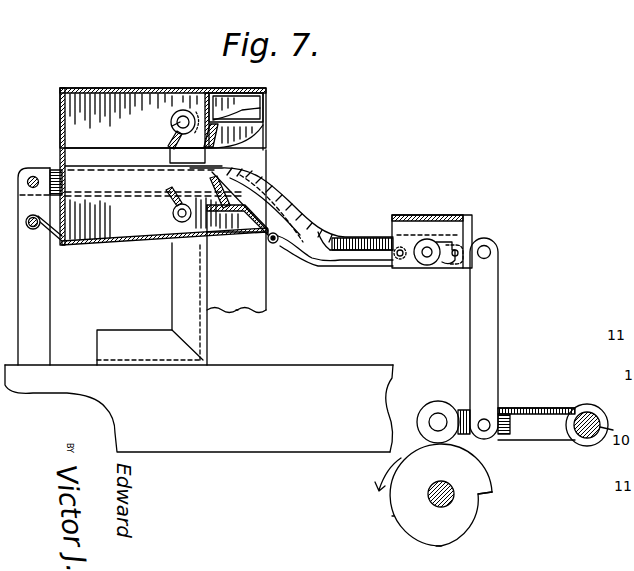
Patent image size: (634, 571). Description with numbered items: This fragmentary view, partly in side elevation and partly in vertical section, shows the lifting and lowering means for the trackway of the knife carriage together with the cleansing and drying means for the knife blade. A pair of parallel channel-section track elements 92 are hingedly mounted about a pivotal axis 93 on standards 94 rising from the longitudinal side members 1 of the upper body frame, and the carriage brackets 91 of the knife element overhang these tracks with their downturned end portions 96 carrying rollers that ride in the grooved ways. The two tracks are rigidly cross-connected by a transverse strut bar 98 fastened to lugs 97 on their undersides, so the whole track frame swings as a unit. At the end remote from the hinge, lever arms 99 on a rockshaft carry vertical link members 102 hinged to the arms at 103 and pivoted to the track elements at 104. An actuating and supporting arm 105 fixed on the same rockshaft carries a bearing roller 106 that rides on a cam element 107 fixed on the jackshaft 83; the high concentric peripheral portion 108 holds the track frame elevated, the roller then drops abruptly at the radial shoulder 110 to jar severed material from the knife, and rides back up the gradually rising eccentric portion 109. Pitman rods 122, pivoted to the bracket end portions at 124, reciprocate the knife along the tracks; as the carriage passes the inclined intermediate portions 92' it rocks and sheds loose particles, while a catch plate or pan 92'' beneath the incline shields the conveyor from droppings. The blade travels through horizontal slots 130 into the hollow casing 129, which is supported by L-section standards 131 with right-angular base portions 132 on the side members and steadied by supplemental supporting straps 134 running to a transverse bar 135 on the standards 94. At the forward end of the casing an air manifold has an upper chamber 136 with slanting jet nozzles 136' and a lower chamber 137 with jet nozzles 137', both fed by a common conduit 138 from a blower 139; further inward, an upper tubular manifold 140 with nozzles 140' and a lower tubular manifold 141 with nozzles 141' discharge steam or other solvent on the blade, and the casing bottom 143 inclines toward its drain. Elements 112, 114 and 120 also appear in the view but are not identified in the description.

The longitudinal side members 1 is at (250, 440).
The jackshaft 83 is at (430, 493).
The carriage brackets 91 is at (430, 218).
The track elements 92 is at (355, 270).
The inclined intermediate portions 92' is at (288, 208).
The catch plate or pan 92'' is at (335, 269).
The pivotal axis 93 is at (34, 176).
The standards 94 is at (40, 325).
The downturned end portions 96 is at (412, 226).
The lugs 97 is at (283, 248).
The transverse strut bar 98 is at (263, 258).
The lever arms 99 is at (551, 427).
The vertical link members 102 is at (485, 307).
The hinge attachment 103 is at (490, 410).
The pivotal attachment 104 is at (491, 254).
The actuating and supporting arm 105 is at (540, 410).
The bearing roller 106 is at (441, 398).
The cam element 107 is at (396, 520).
The high concentric peripheral portion 108 is at (493, 470).
The gradually rising eccentric peripheral portion 109 is at (456, 532).
The abrupt radial shoulder 110 is at (488, 498).
The link 112 is at (599, 301).
The link 114 is at (613, 227).
The lever 120 is at (619, 279).
The pitman rods 122 is at (440, 264).
The pivotal attachment 124 is at (427, 260).
The casing 129 is at (147, 93).
The horizontal slots 130 is at (100, 142).
The standards 131 is at (180, 305).
The right-angular base portions 132 is at (172, 352).
The supplemental supporting straps 134 is at (53, 245).
The transverse bar 135 is at (35, 232).
The upper chamber 136 is at (236, 93).
The slanting jet nozzles 136' is at (263, 108).
The lower chamber 137 is at (237, 233).
The jet nozzles 137' is at (291, 202).
The common conduit 138 is at (262, 140).
The blower 139 is at (247, 308).
The upper tubular manifold 140 is at (169, 124).
The nozzles 140' is at (155, 131).
The lower tubular manifold 141 is at (158, 223).
The nozzles 141' is at (195, 201).
The bottom 143 is at (108, 236).